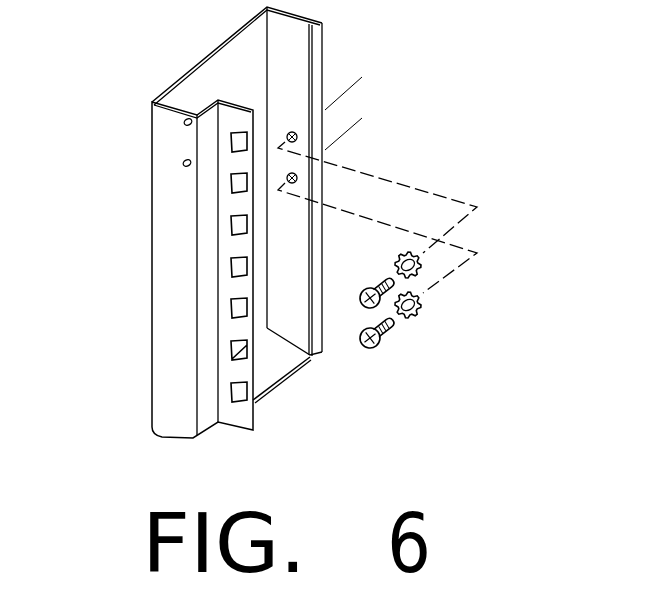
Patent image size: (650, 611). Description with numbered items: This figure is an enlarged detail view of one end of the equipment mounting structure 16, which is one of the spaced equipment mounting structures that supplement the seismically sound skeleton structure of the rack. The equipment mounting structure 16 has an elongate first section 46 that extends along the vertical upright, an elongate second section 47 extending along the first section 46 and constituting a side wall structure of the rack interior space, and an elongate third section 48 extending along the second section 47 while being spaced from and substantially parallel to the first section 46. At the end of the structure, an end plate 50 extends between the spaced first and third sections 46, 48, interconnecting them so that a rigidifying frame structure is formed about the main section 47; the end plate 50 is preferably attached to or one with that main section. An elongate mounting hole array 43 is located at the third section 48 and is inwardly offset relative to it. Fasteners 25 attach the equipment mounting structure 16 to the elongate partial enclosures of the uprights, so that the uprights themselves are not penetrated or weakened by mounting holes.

The equipment mounting structure 16 is at (260, 222).
The fasteners 25 is at (387, 336).
The elongate mounting hole array 43 is at (240, 144).
The elongate first section 46 is at (293, 47).
The elongate second section 47 is at (222, 72).
The elongate third section 48 is at (175, 240).
The end plate 50 is at (287, 370).